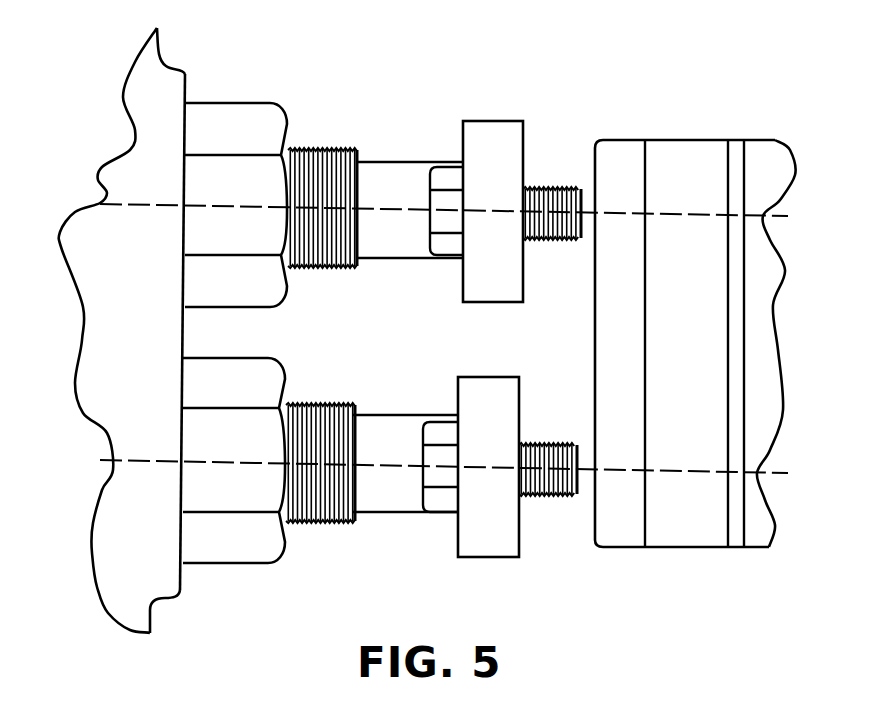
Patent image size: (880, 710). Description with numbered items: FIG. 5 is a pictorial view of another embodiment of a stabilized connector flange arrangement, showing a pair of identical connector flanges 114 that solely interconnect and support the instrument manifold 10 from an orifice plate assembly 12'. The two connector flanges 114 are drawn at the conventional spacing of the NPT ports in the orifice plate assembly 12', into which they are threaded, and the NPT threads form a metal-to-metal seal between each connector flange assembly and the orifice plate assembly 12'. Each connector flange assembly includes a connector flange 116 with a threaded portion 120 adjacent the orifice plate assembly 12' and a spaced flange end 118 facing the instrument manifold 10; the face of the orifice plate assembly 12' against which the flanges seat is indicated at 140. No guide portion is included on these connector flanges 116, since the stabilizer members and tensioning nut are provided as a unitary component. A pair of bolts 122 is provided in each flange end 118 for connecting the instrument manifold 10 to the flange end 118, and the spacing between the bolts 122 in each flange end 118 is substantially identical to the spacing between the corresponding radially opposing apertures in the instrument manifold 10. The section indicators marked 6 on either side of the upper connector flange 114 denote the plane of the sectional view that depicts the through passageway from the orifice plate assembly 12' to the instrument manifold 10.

The instrument manifold 10 is at (682, 150).
The orifice plate assembly 12' is at (157, 319).
The mounting face of plate 140 is at (188, 88).
The connector flange 114 is at (399, 150).
The connector flange 116 is at (400, 247).
The flange end 118 is at (498, 133).
The threaded portion 120 is at (333, 267).
The bolt 122 is at (543, 186).
The section line 6- 6 is at (100, 200).